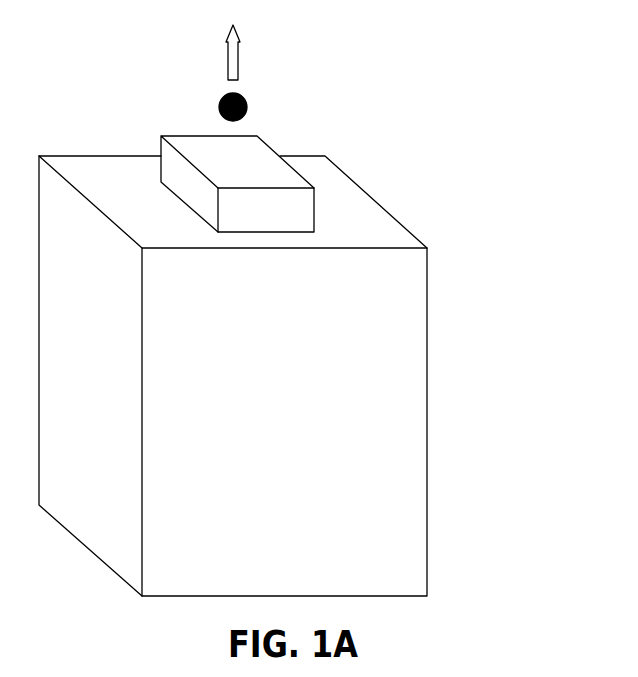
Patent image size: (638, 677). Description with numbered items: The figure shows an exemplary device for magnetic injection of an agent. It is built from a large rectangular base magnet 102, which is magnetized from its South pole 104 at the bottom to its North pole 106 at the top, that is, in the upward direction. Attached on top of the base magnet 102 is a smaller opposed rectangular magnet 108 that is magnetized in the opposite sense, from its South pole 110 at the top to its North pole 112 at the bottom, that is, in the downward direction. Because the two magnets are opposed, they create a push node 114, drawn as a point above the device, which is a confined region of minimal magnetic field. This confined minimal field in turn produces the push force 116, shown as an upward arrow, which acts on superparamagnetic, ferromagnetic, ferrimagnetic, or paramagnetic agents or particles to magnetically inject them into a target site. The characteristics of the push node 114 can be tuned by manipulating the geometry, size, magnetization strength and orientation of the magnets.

The base magnet 102 is at (405, 422).
The South pole of base magnet 104 is at (323, 562).
The North pole of base magnet 106 is at (322, 287).
The opposed magnet 108 is at (300, 210).
The South pole of opposed magnet 110 is at (275, 194).
The North pole of opposed magnet 112 is at (280, 223).
The push node 114 is at (247, 107).
The push force 116 is at (238, 43).